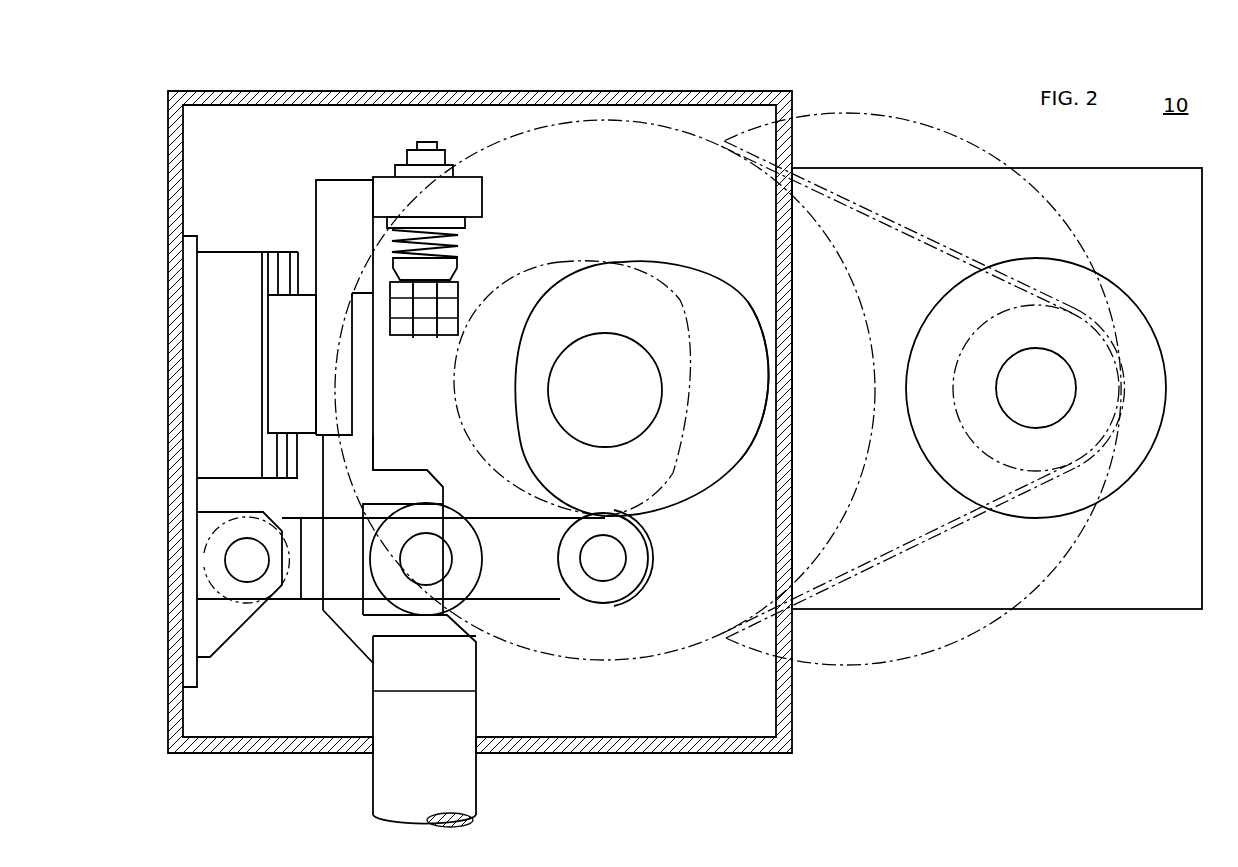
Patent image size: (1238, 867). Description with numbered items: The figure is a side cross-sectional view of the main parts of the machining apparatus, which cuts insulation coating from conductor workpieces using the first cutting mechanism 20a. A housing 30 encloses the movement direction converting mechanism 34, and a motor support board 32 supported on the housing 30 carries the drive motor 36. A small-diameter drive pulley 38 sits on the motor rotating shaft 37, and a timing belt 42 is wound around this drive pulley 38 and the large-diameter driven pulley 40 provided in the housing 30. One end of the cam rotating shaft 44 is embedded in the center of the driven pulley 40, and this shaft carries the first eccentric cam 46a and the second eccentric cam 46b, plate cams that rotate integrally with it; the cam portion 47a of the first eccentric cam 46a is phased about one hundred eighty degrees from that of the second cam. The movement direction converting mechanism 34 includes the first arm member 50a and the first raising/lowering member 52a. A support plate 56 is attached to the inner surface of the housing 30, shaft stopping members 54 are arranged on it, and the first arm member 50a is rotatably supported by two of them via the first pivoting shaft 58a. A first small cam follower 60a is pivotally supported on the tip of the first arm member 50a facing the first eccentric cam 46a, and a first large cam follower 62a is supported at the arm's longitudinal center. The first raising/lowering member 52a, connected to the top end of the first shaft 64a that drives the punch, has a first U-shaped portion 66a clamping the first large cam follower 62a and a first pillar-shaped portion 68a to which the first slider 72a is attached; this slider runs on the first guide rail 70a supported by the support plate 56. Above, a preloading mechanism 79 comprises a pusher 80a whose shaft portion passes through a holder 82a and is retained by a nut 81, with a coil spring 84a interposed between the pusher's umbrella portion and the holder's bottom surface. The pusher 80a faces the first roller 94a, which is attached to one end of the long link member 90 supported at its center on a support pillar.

The first cutting mechanism 20a is at (356, 708).
The housing 30 is at (788, 121).
The motor support board 32 is at (1106, 183).
The movement direction converting mechanism 34 is at (340, 167).
The drive motor 36 is at (1102, 483).
The motor rotating shaft 37 is at (1009, 407).
The drive pulley 38 is at (1078, 327).
The driven pulley 40 is at (845, 284).
The timing belt 42 is at (920, 247).
The cam rotating shaft 44 is at (616, 335).
The first eccentric cam 46a is at (691, 274).
The second eccentric cam 46b is at (566, 250).
The cam portion 47a is at (753, 390).
The first arm member 50a is at (553, 595).
The first raising/lowering member 52a is at (316, 496).
The shaft stopping member 54 is at (225, 628).
The support plate 56 is at (192, 297).
The first pivoting shaft 58a is at (238, 566).
The first small cam follower 60a is at (632, 588).
The first large cam follower 62a is at (445, 512).
The first shaft 64a is at (465, 712).
The first U-shaped portion 66a is at (437, 478).
The first pillar-shaped portion 68a is at (362, 407).
The first guide rail 70a is at (215, 378).
The first slider 72a is at (286, 352).
The preloading mechanism 79 is at (506, 182).
The pusher 80a is at (431, 143).
The nut 81 is at (403, 157).
The holder 82a is at (481, 195).
The coil spring 84a is at (460, 240).
The link member 90 is at (455, 328).
The first roller 94a is at (428, 340).